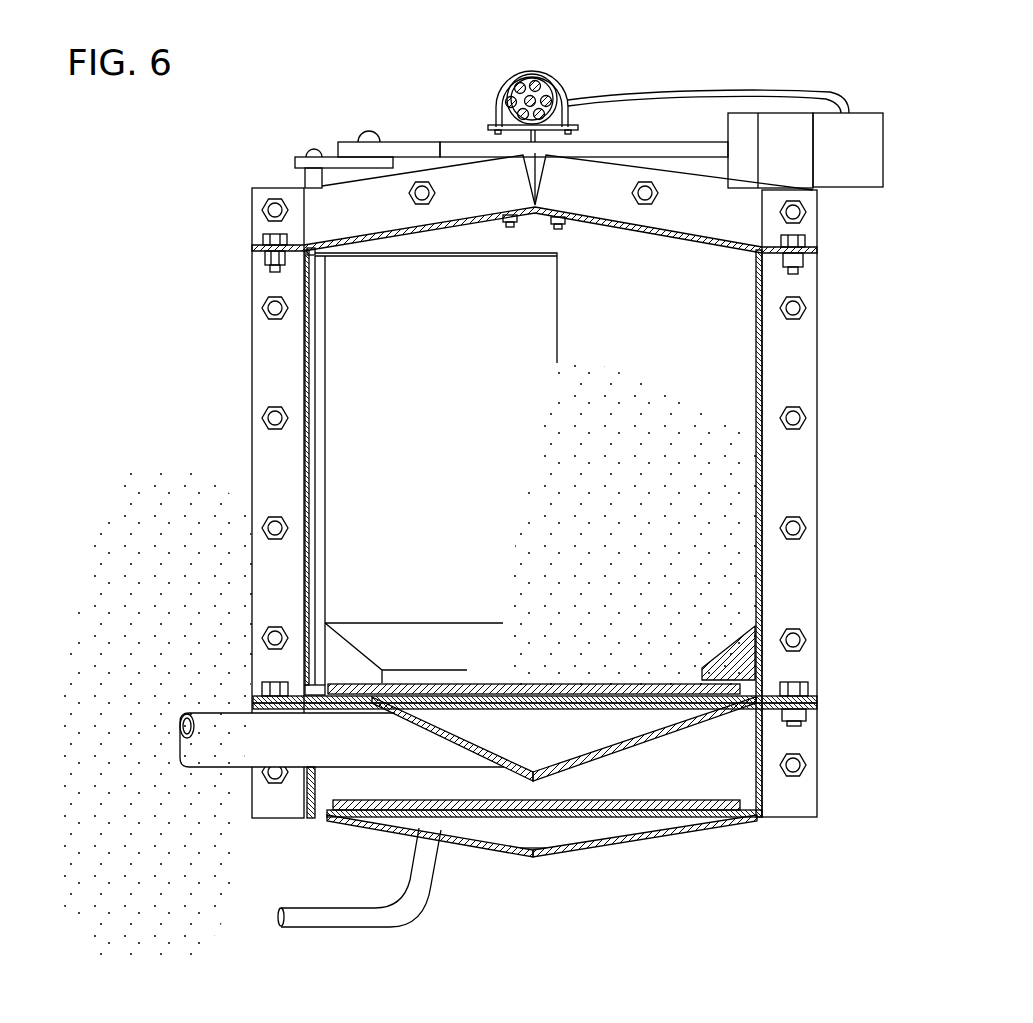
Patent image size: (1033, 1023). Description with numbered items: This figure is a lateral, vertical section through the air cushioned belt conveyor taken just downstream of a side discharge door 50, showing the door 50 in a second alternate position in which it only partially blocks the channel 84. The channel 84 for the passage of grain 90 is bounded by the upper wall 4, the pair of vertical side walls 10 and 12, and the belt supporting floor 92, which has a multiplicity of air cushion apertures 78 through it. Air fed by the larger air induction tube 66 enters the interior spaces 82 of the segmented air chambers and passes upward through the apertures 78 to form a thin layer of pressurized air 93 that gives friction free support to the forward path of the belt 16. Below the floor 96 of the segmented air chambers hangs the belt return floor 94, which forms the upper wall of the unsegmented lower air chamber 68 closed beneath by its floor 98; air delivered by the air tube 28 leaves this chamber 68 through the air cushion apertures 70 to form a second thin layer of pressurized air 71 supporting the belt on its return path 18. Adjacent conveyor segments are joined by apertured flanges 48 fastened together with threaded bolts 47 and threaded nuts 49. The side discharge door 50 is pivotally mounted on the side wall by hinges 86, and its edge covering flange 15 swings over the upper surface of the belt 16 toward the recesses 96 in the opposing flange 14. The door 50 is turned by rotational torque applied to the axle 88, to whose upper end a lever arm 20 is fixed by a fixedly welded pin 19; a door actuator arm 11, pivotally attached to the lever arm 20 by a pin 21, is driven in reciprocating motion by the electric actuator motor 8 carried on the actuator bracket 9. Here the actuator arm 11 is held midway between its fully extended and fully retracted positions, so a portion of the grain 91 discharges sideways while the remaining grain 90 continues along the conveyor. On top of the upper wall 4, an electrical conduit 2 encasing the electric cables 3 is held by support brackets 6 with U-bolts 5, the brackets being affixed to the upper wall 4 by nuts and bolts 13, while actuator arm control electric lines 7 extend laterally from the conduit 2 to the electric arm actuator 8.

The electrical conduit 2 is at (521, 72).
The electric cables 3 is at (553, 97).
The upper wall 4 is at (453, 227).
The U-bolts 5 is at (543, 70).
The support brackets 6 is at (494, 127).
The actuator arm control electric lines 7 is at (707, 97).
The electric actuator motor 8 is at (857, 150).
The actuator bracket 9 is at (790, 150).
The side wall 10 is at (303, 450).
The door actuator arm 11 is at (652, 150).
The side wall 12 is at (760, 362).
The nuts and bolts 13 is at (558, 225).
The opposing flange 14 is at (745, 647).
The edge covering flange 15 is at (470, 648).
The belt 16 is at (747, 677).
The return path of the belt 18 is at (712, 804).
The fixedly welded pin 19 is at (312, 155).
The lever arm 20 is at (330, 163).
The pin 21 is at (368, 135).
The air induction tube 28 is at (412, 888).
The threaded bolts 47 is at (270, 241).
The apertured flanges 48 is at (283, 345).
The threaded nuts 49 is at (275, 265).
The side discharge door 50 is at (467, 367).
The air induction tube 66 is at (335, 745).
The unsegmented lower air chamber 68 is at (540, 830).
The air cushion apertures 70 is at (610, 818).
The thin layer of pressurized air 71 is at (492, 820).
The air cushion apertures 78 is at (680, 723).
The interior spaces 82 is at (564, 743).
The channel 84 is at (673, 318).
The hinges 86 is at (302, 377).
The axles 88 is at (313, 180).
The grain 90 is at (660, 458).
The portion of the grain 91 is at (175, 553).
The belt supporting floor 92 is at (510, 708).
The thin layer of pressurized air 93 is at (560, 708).
The belt return floor 94 is at (743, 815).
The floor of the segmented air chambers 96 is at (600, 763).
The floor of the lower air chamber 98 is at (542, 870).